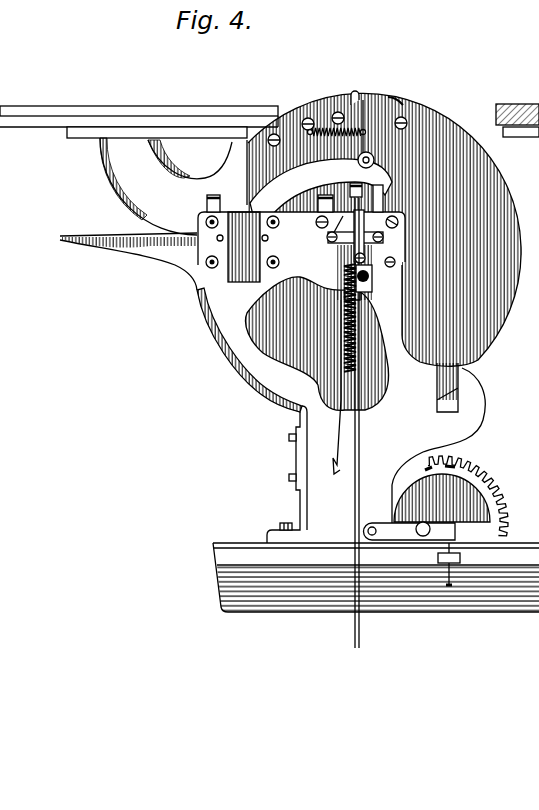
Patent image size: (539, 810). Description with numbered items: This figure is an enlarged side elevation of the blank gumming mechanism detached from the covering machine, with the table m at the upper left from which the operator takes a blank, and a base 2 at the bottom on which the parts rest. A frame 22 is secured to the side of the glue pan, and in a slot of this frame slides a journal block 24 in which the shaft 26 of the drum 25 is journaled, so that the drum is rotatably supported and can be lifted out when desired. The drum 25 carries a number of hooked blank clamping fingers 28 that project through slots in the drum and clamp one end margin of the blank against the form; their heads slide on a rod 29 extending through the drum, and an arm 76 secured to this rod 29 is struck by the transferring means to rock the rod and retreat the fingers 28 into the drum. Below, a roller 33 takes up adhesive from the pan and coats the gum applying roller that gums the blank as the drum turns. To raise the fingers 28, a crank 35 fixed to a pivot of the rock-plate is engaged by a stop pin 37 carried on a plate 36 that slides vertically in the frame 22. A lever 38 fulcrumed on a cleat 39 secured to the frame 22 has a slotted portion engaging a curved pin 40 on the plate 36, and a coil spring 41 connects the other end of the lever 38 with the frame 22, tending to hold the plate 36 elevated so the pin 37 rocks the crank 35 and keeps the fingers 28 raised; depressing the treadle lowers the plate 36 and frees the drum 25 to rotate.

The table m is at (98, 108).
The base 2 is at (528, 543).
The frame 22 is at (316, 493).
The journal block 24 is at (348, 269).
The drum 25 is at (503, 323).
The shaft 26 is at (369, 280).
The blank clamping fingers 28 is at (355, 92).
The rod 29 is at (374, 154).
The roller 33 is at (472, 512).
The crank 35 is at (327, 186).
The plate 36 is at (349, 197).
The stop pin 37 is at (384, 209).
The lever 38 is at (352, 240).
The cleat 39 is at (377, 256).
The curved pin 40 is at (342, 220).
The coil spring 41 is at (342, 363).
The arm 76 is at (375, 104).